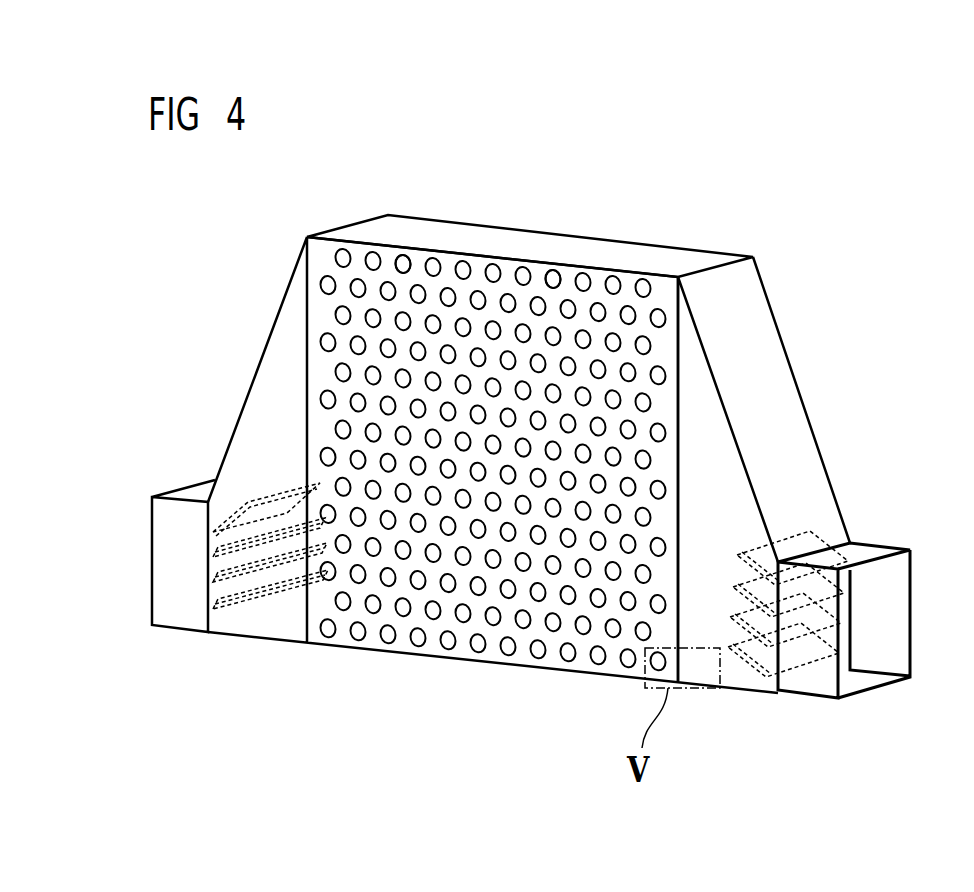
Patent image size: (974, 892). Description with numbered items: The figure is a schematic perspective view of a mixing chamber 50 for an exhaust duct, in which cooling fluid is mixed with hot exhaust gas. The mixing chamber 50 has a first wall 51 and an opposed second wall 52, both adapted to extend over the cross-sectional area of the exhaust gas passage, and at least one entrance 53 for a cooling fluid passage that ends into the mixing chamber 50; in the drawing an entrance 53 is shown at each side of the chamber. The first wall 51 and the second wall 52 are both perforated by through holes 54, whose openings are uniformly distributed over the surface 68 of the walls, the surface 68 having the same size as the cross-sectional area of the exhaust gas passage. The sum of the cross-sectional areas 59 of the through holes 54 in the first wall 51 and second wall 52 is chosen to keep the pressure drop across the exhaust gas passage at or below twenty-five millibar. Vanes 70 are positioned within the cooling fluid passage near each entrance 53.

The mixing chamber 50 is at (529, 417).
The first wall 51 is at (493, 411).
The second wall 52 is at (530, 216).
The entrance 53 is at (534, 580).
The through holes 54 is at (544, 219).
The cross-sectional areas 59 is at (412, 205).
The surface 68 is at (668, 421).
The vanes 70 is at (530, 548).